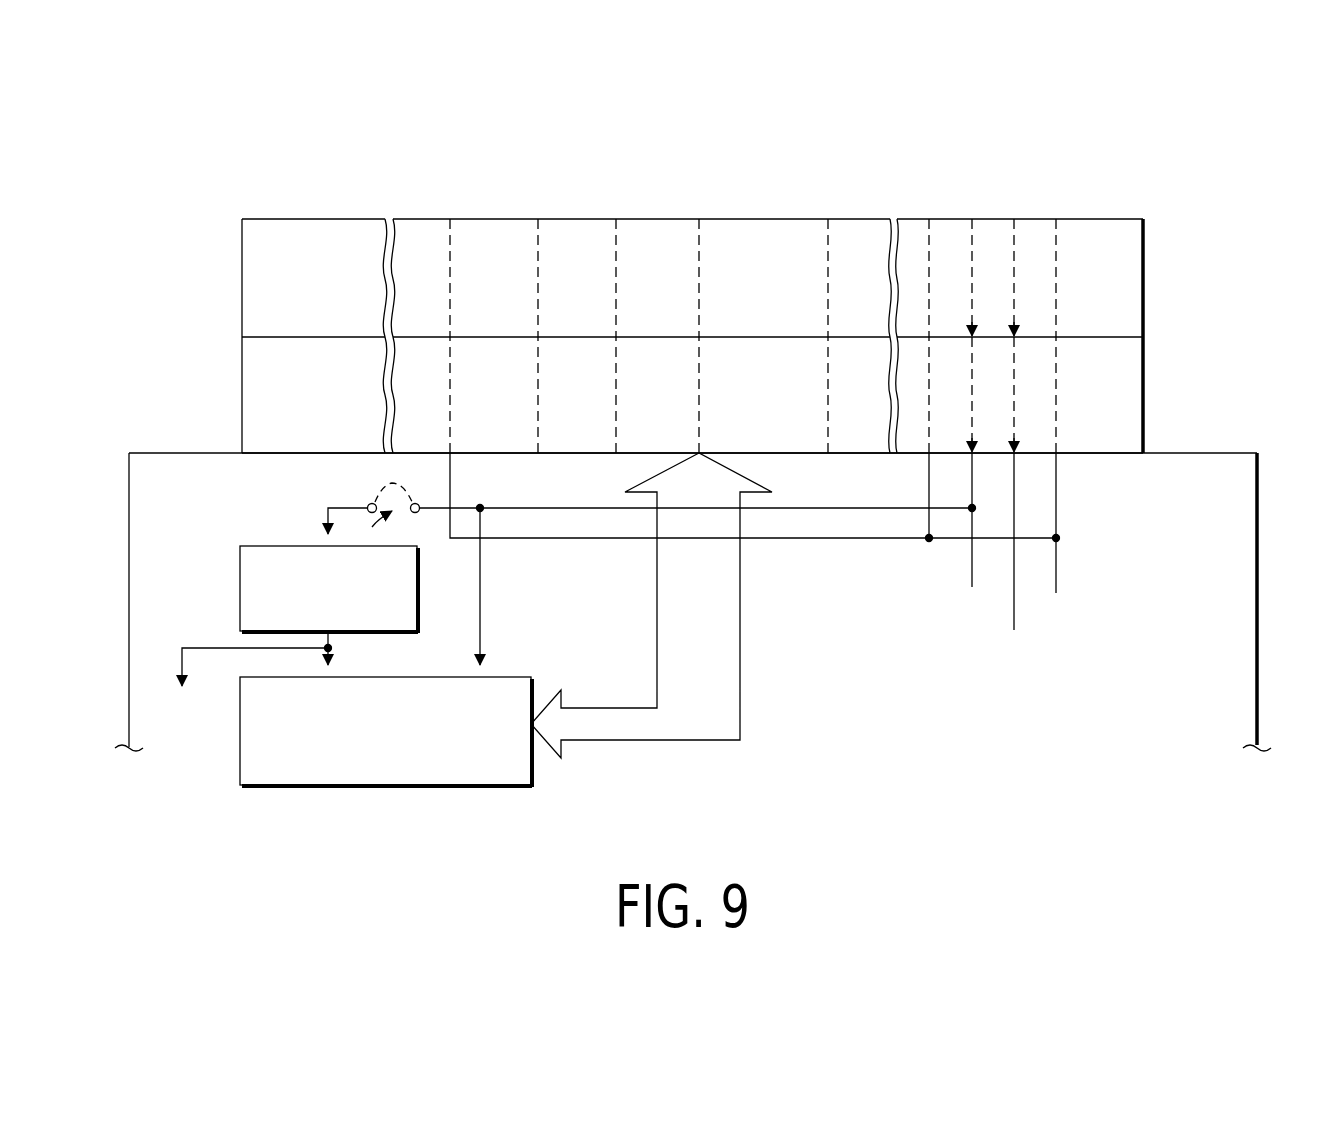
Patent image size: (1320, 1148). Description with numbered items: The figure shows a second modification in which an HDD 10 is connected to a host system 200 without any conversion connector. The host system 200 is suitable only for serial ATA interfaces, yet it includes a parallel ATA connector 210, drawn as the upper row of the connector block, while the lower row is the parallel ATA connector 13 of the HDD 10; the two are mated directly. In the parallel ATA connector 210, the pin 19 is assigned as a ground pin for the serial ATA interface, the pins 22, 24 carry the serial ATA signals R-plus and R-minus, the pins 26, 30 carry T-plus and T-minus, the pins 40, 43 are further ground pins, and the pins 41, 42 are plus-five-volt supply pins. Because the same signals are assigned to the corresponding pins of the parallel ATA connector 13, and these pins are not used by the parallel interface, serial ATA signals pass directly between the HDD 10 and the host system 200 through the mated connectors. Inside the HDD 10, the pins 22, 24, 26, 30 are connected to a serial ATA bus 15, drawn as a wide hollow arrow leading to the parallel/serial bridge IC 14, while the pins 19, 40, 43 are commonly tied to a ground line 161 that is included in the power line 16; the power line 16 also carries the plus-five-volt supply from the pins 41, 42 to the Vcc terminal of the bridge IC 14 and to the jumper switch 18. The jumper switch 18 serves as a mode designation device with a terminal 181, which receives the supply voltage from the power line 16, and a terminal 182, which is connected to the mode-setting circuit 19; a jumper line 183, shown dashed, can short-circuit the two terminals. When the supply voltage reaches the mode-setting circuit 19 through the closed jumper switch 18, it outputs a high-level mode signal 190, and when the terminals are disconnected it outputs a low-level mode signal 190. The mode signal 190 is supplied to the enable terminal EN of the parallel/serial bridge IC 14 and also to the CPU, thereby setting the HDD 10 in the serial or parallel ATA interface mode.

The HDD 10 is at (1209, 457).
The parallel ATA connector 13 is at (242, 397).
The parallel/serial bridge IC 14 is at (240, 757).
The serial ATA bus 15 is at (740, 690).
The power line 16 is at (1078, 517).
The ground line 161 is at (1057, 566).
The jumper switch 18 is at (374, 523).
The terminal 181 is at (418, 514).
The terminal 182 is at (367, 506).
The jumper line 183 is at (384, 480).
The mode-setting circuit 19 is at (205, 577).
The mode signal 190 is at (333, 642).
The host system 200 is at (208, 216).
The parallel ATA connector 210 is at (242, 267).
The pin 22 is at (540, 319).
The pin 24 is at (623, 319).
The pin 26 is at (705, 319).
The pin 30 is at (834, 319).
The pin 40 is at (931, 319).
The pin 41 is at (973, 304).
The pin 42 is at (1016, 319).
The pin 43 is at (1057, 304).